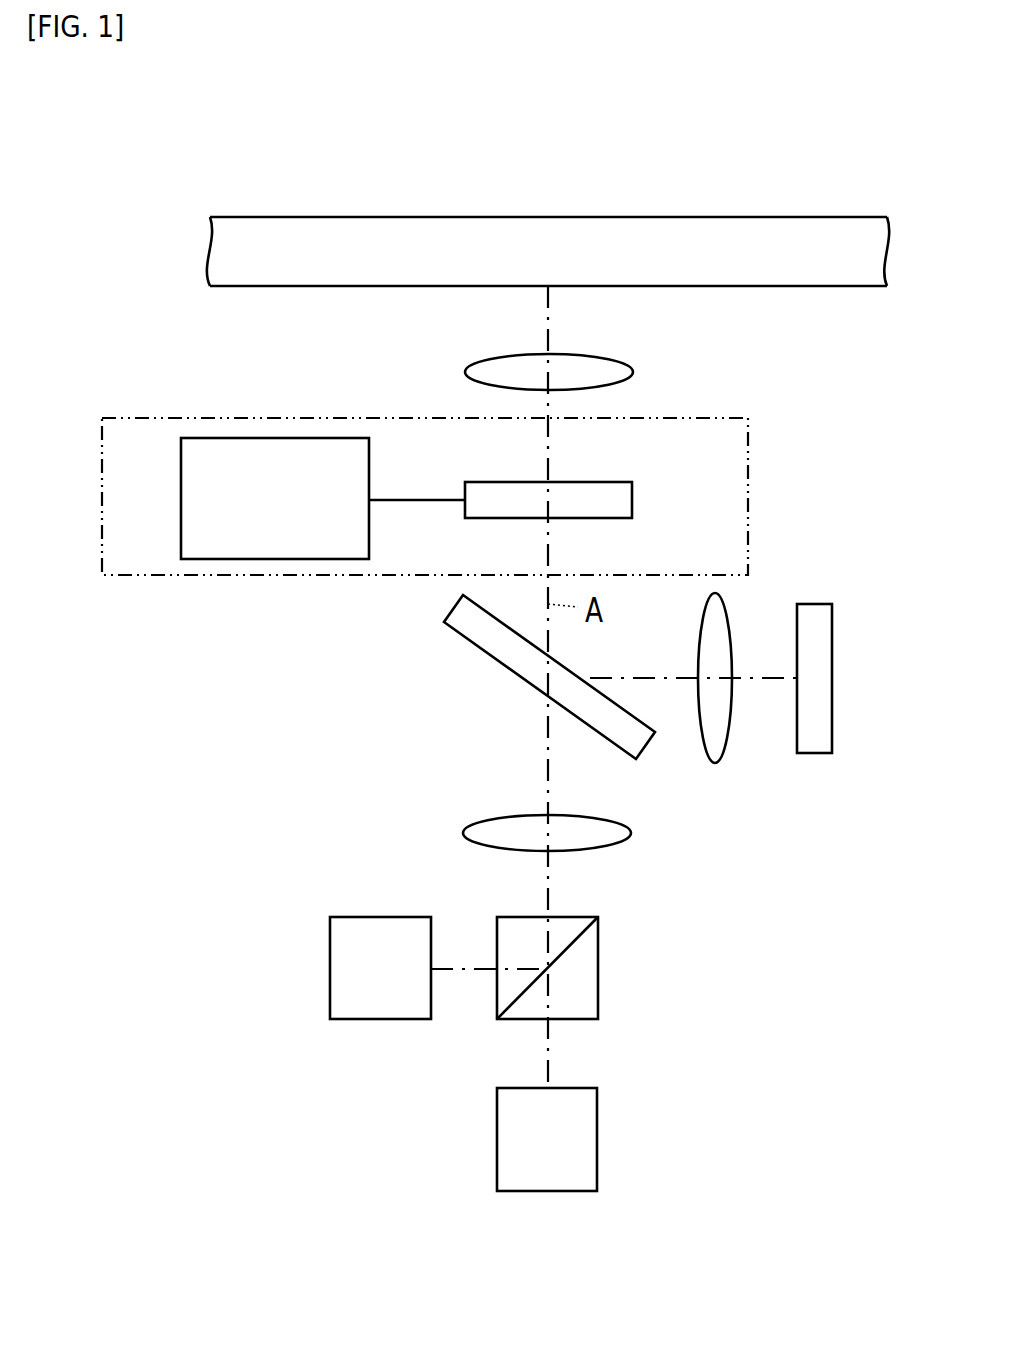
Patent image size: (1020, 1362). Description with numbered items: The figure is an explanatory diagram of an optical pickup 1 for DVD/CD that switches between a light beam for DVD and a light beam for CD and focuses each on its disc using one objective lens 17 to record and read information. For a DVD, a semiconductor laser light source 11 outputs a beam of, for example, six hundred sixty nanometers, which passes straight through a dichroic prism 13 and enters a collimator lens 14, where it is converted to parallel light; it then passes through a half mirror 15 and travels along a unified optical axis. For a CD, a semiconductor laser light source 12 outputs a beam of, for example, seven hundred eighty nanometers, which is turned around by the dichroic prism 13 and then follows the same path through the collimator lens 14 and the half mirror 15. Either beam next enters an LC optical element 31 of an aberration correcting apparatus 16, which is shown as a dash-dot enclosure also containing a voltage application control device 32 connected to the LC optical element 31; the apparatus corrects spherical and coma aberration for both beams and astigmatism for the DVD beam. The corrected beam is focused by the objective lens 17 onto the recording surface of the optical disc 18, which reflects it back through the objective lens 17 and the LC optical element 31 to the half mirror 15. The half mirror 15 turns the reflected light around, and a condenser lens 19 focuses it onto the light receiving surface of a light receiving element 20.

The optical pickup 1 is at (806, 1054).
The semiconductor laser light source for DVD 11 is at (597, 1142).
The semiconductor laser light source for CD 12 is at (330, 998).
The dichroic prism 13 is at (598, 988).
The collimator lens 14 is at (618, 848).
The half mirror 15 is at (473, 648).
The aberration correcting apparatus 16 is at (748, 500).
The objective lens 17 is at (633, 370).
The optical disc 18 is at (836, 286).
The condenser lens 19 is at (720, 755).
The light receiving element 20 is at (832, 735).
The LC optical element 31 is at (632, 500).
The voltage application control device 32 is at (181, 517).